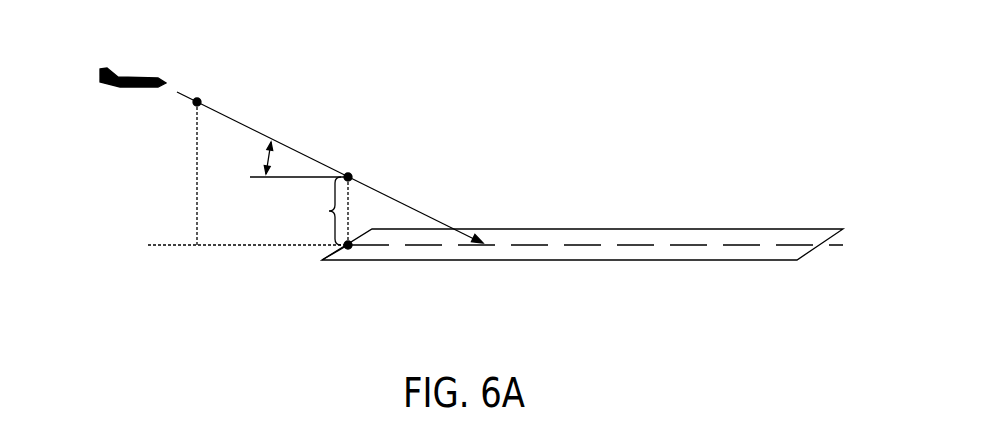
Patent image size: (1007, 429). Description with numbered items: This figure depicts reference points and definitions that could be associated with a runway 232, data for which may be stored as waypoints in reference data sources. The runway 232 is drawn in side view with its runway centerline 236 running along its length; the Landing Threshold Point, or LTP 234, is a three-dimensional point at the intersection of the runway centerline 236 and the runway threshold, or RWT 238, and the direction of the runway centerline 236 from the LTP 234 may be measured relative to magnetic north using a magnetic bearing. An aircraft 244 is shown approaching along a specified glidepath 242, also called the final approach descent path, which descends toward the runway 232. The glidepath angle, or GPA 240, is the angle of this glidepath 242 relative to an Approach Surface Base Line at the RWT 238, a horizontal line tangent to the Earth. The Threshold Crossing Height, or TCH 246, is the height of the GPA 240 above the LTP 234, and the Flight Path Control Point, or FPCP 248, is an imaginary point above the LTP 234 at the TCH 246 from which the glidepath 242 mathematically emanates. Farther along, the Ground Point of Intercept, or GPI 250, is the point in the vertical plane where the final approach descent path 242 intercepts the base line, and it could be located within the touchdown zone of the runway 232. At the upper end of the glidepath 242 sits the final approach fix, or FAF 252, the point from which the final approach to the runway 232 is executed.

The runway 232 is at (645, 230).
The Landing Threshold Point (LTP) 234 is at (359, 260).
The runway centerline 236 is at (585, 257).
The runway threshold (RWT) 238 is at (318, 253).
The glidepath angle (GPA) 240 is at (275, 154).
The glidepath 242 is at (263, 122).
The aircraft 244 is at (134, 62).
The Threshold Crossing Height (TCH) 246 is at (280, 211).
The Flight Path Control Point (FPCP) 248 is at (359, 166).
The Ground Point of Intercept (GPI) 250 is at (493, 232).
The final approach fix (FAF) 252 is at (181, 114).